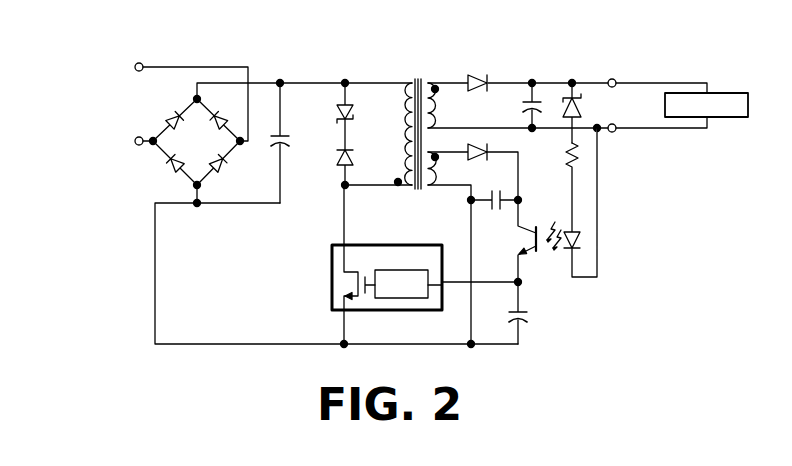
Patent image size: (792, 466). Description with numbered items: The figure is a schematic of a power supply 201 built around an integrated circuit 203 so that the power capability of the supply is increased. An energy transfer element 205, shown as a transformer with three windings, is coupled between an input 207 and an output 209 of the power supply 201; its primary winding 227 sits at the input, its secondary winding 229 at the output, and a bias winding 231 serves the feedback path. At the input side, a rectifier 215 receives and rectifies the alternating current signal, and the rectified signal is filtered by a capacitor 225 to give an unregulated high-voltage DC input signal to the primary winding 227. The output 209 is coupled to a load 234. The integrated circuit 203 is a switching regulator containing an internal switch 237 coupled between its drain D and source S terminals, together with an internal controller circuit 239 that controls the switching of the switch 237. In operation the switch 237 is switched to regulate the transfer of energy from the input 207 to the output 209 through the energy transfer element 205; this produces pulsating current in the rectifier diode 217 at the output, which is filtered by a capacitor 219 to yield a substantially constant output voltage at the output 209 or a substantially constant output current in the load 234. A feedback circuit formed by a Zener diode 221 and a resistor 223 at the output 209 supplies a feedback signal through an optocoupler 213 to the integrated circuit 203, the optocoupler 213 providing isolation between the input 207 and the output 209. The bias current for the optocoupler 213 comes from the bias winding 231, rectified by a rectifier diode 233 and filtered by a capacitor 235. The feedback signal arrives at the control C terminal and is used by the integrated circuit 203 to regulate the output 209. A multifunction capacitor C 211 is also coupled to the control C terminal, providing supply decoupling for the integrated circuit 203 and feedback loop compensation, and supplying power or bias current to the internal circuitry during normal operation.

The power supply 201 is at (678, 13).
The integrated circuit 203 is at (327, 278).
The energy transfer element 205 is at (410, 76).
The input 207 is at (110, 102).
The output 209 is at (615, 68).
The capacitor C 211 is at (528, 323).
The optocoupler 213 is at (550, 258).
The rectifier 215 is at (150, 165).
The rectifier diode 217 is at (478, 62).
The capacitor 219 is at (522, 107).
The Zener diode 221 is at (585, 100).
The resistor 223 is at (566, 162).
The capacitor 225 is at (275, 150).
The primary winding 227 is at (403, 189).
The secondary winding 229 is at (432, 110).
The bias winding 231 is at (427, 189).
The rectifier diode 233 is at (478, 160).
The load 234 is at (725, 92).
The capacitor 235 is at (493, 222).
The switch 237 is at (340, 287).
The controller circuit 239 is at (407, 288).